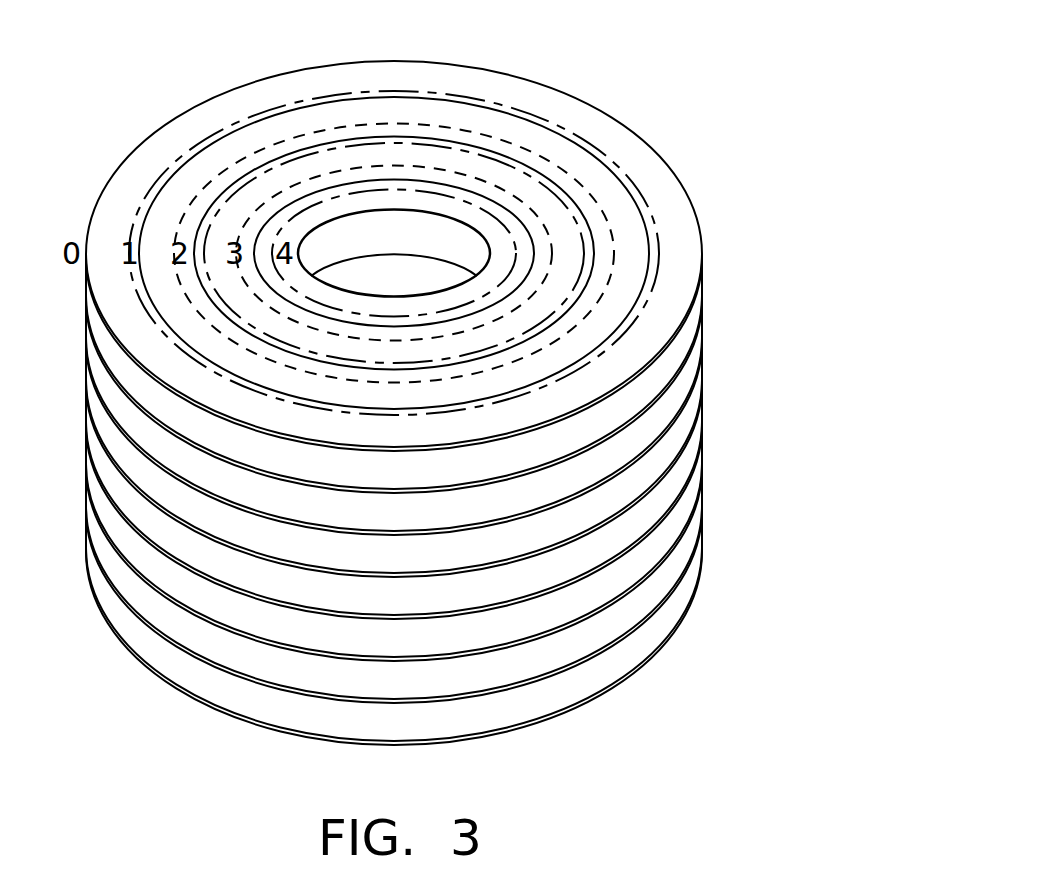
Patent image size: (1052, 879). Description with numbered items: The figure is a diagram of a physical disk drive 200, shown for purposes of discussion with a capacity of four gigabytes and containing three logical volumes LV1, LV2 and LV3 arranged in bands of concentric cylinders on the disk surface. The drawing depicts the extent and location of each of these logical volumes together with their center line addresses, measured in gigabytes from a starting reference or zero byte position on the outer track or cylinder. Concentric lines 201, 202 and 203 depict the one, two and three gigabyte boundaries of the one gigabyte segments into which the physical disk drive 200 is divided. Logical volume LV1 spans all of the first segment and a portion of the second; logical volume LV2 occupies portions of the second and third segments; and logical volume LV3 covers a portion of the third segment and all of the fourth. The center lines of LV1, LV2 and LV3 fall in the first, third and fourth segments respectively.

The physical disk drive 200 is at (670, 712).
The concentric line 201 is at (168, 180).
The concentric line 202 is at (247, 170).
The concentric line 203 is at (331, 185).
The logical volume LV(1) LV1 is at (420, 92).
The logical volume LV(2) LV2 is at (469, 152).
The logical volume LV(3) LV3 is at (493, 218).